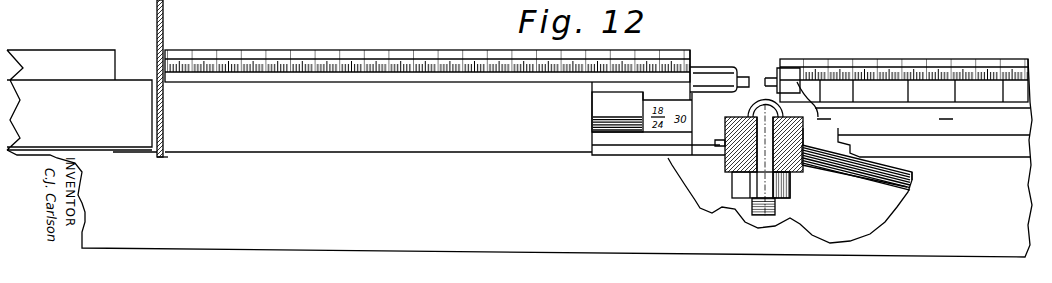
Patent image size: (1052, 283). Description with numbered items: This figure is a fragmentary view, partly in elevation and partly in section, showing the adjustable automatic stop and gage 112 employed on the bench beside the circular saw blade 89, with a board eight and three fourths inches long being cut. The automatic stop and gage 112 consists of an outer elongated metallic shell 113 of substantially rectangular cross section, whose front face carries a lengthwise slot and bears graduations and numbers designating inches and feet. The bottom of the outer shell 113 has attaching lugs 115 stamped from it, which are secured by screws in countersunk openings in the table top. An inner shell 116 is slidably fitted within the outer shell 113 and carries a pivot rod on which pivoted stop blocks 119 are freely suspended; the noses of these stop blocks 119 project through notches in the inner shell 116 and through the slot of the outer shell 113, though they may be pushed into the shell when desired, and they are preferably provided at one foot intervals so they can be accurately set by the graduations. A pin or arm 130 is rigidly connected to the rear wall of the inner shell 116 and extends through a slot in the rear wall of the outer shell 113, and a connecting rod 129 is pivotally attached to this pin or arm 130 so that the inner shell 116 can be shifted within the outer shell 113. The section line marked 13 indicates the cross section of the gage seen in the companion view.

The circular saw blade 89 is at (164, 14).
The automatic stop and gage 112 is at (312, 52).
The outer elongated metallic shell 113 is at (798, 62).
The attaching lugs 115 is at (1012, 129).
The inner shell 116 is at (731, 70).
The pivoted stop blocks 119 is at (612, 100).
The connecting rod 129 is at (850, 176).
The pin or arm 130 is at (724, 144).
The section line 13- 13 is at (716, 225).